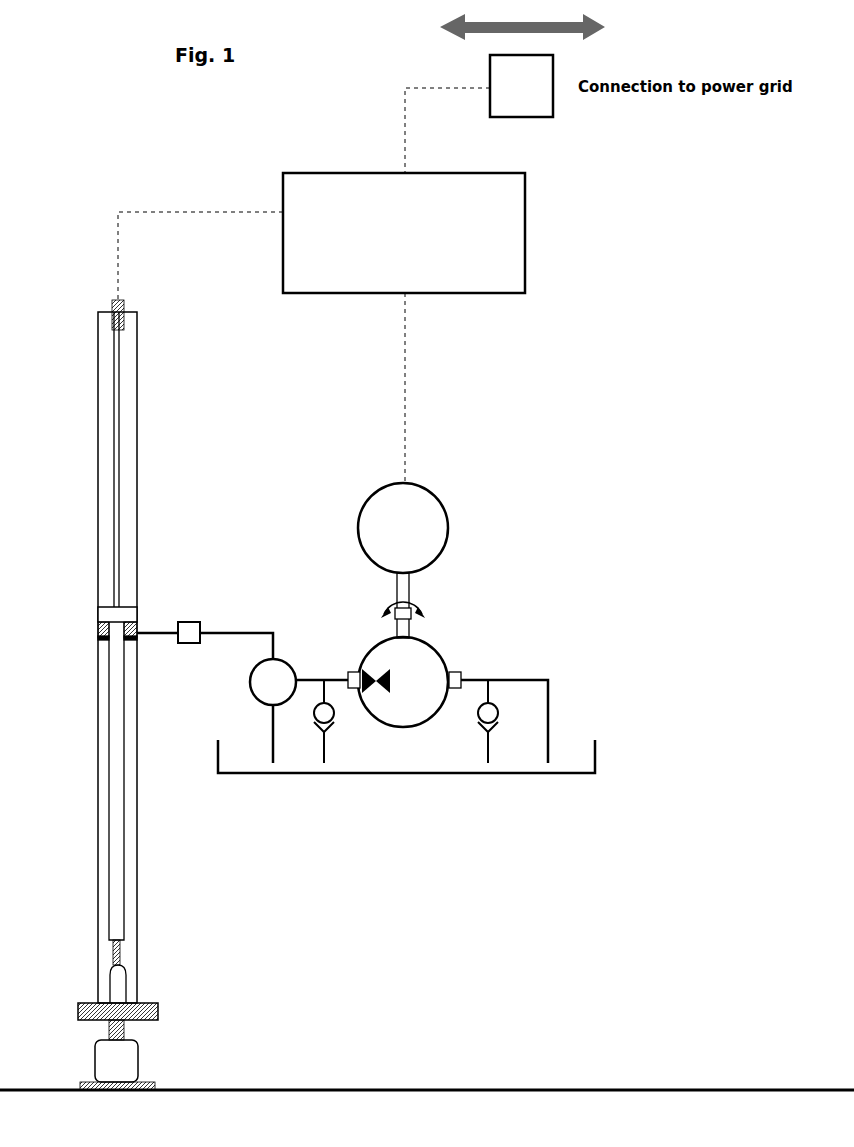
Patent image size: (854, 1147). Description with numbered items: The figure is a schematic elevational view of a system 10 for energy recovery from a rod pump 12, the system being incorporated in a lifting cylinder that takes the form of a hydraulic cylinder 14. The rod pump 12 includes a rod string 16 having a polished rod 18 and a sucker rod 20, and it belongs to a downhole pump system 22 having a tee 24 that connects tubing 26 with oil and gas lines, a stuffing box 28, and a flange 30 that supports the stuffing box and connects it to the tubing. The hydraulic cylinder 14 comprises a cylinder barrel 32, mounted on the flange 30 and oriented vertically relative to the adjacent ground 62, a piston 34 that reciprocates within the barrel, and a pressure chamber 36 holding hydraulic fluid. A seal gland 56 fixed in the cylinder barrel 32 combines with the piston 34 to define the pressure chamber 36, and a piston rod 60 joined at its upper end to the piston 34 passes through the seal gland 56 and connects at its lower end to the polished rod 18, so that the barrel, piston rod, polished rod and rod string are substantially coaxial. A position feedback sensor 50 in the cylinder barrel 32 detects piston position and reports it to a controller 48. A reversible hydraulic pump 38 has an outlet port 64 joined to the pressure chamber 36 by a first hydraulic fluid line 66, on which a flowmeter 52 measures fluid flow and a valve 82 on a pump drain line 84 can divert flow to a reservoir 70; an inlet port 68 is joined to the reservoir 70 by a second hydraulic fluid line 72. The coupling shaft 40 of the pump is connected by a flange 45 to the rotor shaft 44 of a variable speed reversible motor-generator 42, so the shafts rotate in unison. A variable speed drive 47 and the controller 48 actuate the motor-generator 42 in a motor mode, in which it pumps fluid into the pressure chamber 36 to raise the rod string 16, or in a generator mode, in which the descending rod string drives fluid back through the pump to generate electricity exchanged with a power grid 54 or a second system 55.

The system for energy recovery 10 is at (592, 586).
The rod pump 12 is at (168, 850).
The hydraulic cylinder 14 is at (148, 398).
The rod string 16 is at (173, 949).
The polished rod 18 is at (130, 951).
The sucker rod 20 is at (117, 1062).
The downhole pump system 22 is at (150, 1040).
The tee 24 is at (138, 1076).
The tubing 26 is at (108, 1030).
The stuffing box 28 is at (127, 990).
The flange 30 is at (160, 1010).
The cylinder barrel 32 is at (165, 657).
The piston 34 is at (133, 610).
The pressure chamber 36 is at (97, 632).
The reversible hydraulic pump 38 is at (430, 656).
The coupling shaft 40 is at (412, 628).
The variable speed reversible motor-generator 42 is at (420, 490).
The rotor shaft 44 is at (397, 600).
The flange 45 is at (392, 612).
The variable speed drive 47 is at (465, 233).
The controller 48 is at (527, 262).
The position feedback sensor 50 is at (123, 305).
The flowmeter 52 is at (189, 622).
The power grid 54 is at (558, 103).
The second system 55 is at (537, 117).
The seal gland 56 is at (105, 640).
The piston rod 60 is at (118, 706).
The ground 62 is at (273, 1090).
The outlet port 64 is at (358, 672).
The first hydraulic fluid line 66 is at (215, 632).
The inlet port 68 is at (462, 676).
The reservoir 70 is at (598, 766).
The second hydraulic fluid line 72 is at (535, 680).
The valve 82 is at (280, 662).
The pump drain line 84 is at (271, 722).